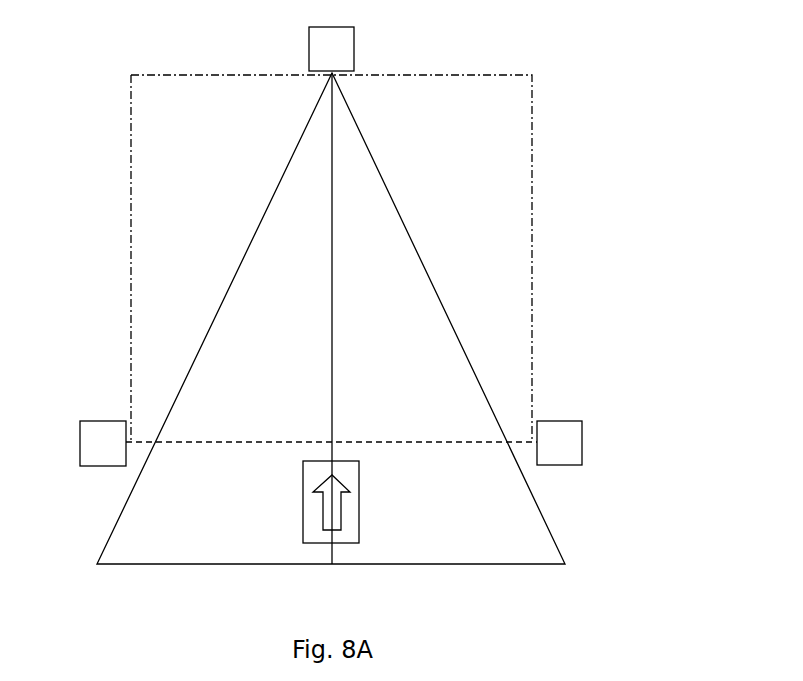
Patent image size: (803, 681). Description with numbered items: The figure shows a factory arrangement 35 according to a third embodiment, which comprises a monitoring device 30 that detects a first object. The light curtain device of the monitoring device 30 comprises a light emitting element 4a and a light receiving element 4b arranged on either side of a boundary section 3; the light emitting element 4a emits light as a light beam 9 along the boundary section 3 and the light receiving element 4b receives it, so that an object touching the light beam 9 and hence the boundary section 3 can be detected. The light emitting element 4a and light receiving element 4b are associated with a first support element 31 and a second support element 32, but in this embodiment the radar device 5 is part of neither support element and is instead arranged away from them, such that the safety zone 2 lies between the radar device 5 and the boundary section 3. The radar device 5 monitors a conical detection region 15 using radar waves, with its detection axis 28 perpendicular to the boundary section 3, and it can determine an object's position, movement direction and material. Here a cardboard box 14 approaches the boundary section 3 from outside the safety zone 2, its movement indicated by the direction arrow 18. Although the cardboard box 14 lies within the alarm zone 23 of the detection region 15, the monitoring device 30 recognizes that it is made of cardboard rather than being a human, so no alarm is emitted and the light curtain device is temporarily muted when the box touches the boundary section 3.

The safety zone 2 is at (532, 120).
The boundary section 3 is at (469, 445).
The radar device 5 is at (343, 41).
The light beam 9 is at (226, 441).
The cardboard box 14 is at (359, 531).
The detection region 15 is at (455, 326).
The direction arrow 18 is at (331, 508).
The alarm zone 23 is at (498, 546).
The detection axis 28 is at (333, 140).
The monitoring device 30 is at (628, 460).
The first support element 31 is at (74, 440).
The second support element 32 is at (589, 432).
The factory arrangement 35 is at (640, 157).
The light emitting element 4a is at (95, 458).
The light receiving element 4b is at (556, 455).